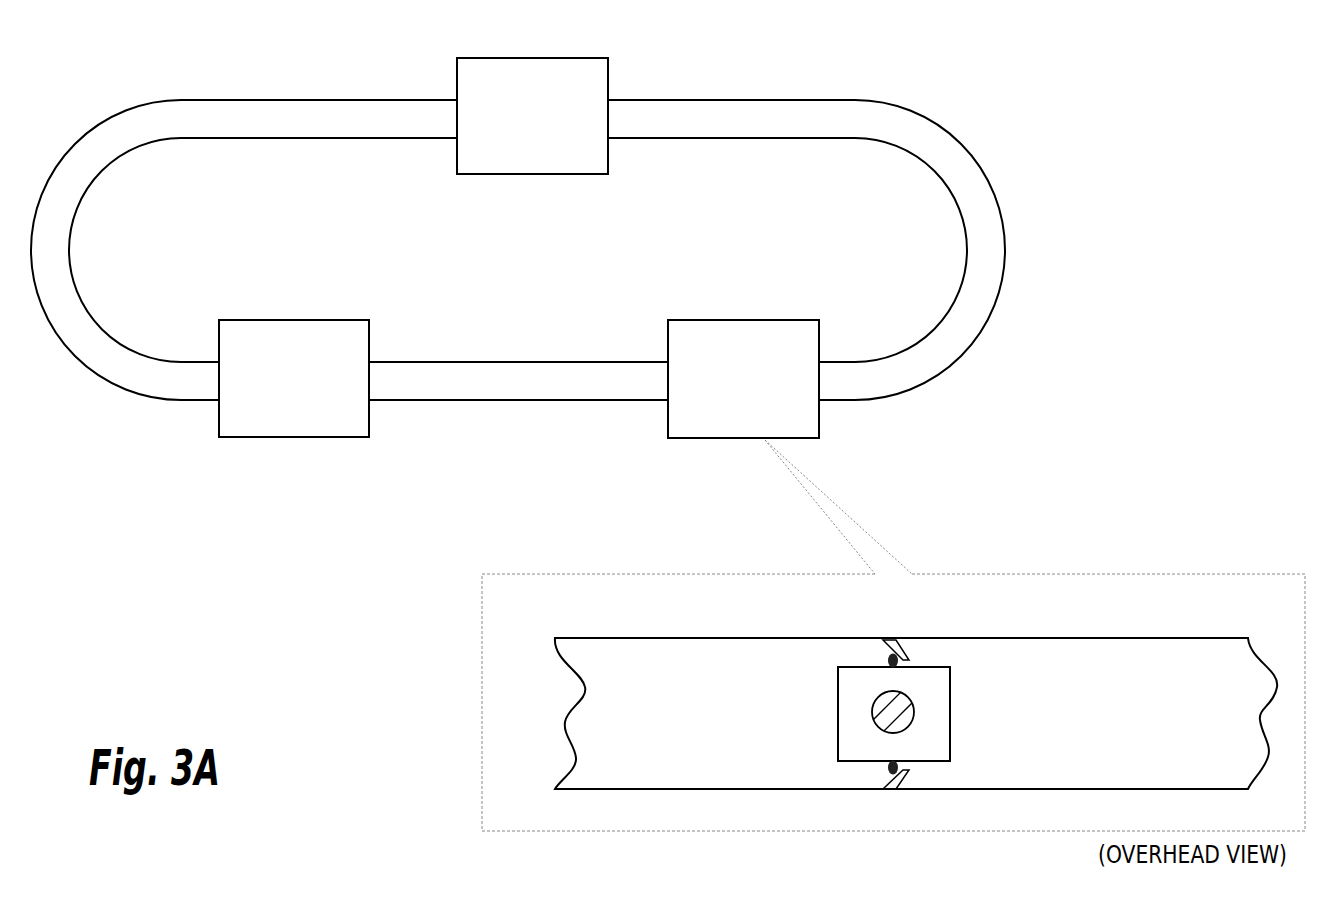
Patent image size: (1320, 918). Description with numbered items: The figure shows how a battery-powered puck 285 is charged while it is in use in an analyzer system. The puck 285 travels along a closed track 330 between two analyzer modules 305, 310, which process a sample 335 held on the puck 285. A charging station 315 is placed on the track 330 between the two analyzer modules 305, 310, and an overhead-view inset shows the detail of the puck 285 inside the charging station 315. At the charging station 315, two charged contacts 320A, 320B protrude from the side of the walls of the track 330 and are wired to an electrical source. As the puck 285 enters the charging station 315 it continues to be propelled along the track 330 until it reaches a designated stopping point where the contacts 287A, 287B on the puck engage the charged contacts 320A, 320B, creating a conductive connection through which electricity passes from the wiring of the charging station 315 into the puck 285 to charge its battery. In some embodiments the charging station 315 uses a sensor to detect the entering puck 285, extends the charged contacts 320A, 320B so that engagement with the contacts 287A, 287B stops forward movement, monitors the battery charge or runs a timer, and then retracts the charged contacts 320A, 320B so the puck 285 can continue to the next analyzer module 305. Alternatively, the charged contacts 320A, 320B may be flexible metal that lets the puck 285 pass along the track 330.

The analyzer module 305 is at (516, 98).
The analyzer module 310 is at (278, 360).
The charging station 315 is at (727, 360).
The track 330 is at (985, 227).
The puck 285 is at (950, 701).
The sample 335 is at (873, 712).
The contact 287A is at (888, 657).
The contact 287B is at (890, 772).
The charged contact 320A is at (903, 655).
The charged contact 320B is at (908, 775).